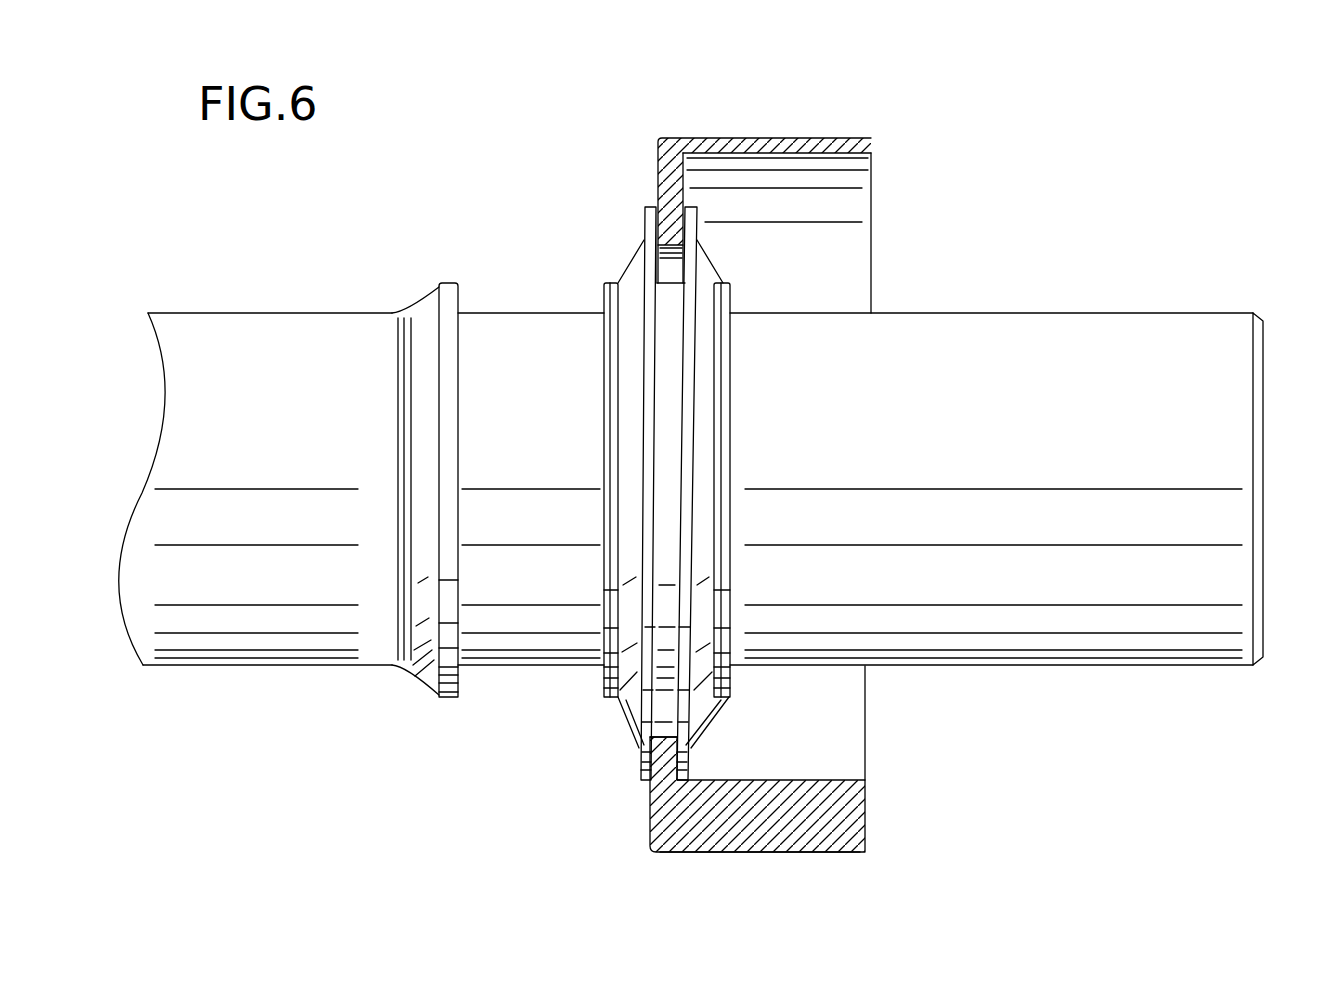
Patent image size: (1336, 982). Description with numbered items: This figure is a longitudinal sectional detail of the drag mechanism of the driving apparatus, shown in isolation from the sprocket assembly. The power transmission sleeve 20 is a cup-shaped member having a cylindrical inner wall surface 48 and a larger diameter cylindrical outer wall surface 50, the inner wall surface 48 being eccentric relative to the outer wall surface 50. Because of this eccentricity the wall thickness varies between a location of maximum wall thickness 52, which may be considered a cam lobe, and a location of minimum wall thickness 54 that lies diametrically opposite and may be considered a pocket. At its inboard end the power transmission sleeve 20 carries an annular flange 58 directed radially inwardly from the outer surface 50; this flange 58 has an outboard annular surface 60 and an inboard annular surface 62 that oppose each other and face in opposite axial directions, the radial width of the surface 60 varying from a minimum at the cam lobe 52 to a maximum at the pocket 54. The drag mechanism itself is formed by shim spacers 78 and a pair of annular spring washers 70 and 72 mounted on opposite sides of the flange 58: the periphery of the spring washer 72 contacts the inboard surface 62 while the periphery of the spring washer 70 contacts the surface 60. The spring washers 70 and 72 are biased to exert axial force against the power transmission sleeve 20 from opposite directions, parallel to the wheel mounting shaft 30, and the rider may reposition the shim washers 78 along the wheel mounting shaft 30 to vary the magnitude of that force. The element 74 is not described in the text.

The power transmission sleeve 20 is at (706, 113).
The wheel mounting shaft 30 is at (1062, 352).
The cylindrical inner wall surface 48 is at (813, 780).
The cylindrical outer wall surface 50 is at (700, 853).
The location of maximum wall thickness 52 is at (785, 853).
The location of minimum wall thickness 54 is at (845, 138).
The annular flange 58 is at (658, 162).
The outboard annular surface 60 is at (685, 178).
The inboard annular surface 62 is at (658, 187).
The annular spring washer 70 is at (710, 262).
The annular spring washer 72 is at (633, 258).
The first collar 74 is at (604, 380).
The shim spacers 78 is at (731, 388).